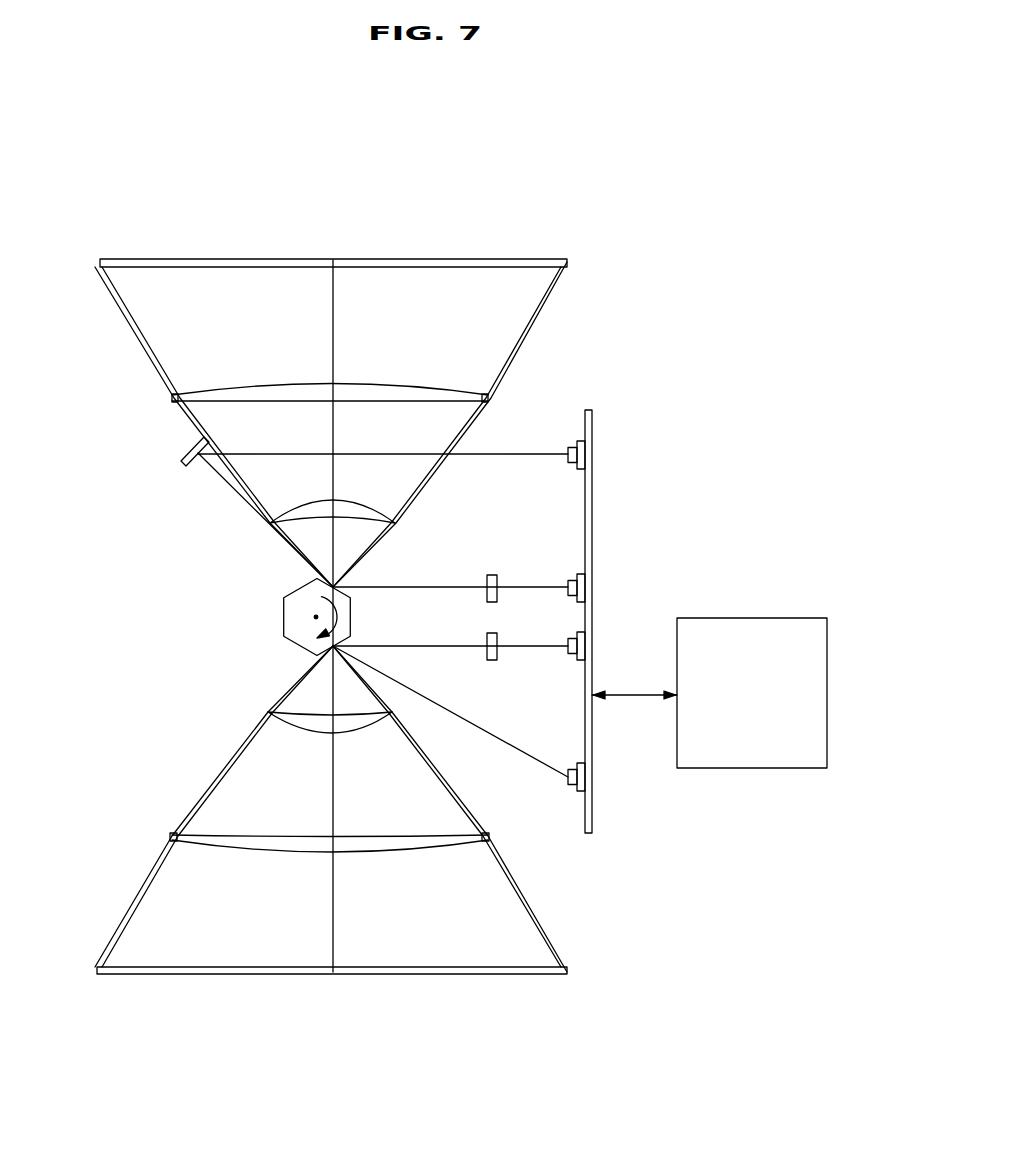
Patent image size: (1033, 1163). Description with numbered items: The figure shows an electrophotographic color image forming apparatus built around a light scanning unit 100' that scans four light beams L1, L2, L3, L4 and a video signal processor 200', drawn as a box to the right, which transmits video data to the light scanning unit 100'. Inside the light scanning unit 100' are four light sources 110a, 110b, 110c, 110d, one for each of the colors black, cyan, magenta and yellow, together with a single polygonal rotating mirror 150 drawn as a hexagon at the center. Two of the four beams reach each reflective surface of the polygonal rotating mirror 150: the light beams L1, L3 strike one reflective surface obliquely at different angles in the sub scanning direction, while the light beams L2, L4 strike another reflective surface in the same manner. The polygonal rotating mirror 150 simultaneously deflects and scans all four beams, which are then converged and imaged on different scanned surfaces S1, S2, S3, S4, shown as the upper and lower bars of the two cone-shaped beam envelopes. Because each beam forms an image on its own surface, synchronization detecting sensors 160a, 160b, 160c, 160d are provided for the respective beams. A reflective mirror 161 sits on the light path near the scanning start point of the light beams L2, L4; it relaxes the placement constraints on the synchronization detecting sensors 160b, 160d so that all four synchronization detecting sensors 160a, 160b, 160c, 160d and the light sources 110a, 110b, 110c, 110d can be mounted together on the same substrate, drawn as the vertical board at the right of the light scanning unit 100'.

The light scanning unit 100' is at (405, 569).
The video signal processor 200' is at (752, 657).
The polygonal rotating mirror 150 is at (283, 617).
The reflective mirror 161 is at (182, 463).
The synchronization detecting sensor 160a is at (527, 749).
The synchronization detecting sensor 160b is at (512, 470).
The synchronization detecting sensor 160c is at (572, 770).
The synchronization detecting sensor 160d is at (570, 465).
The light source 110a is at (514, 661).
The light source 110b is at (512, 574).
The light source 110c is at (570, 655).
The light source 110d is at (573, 582).
The scanned surface S1 is at (332, 944).
The scanned surface S2 is at (333, 230).
The scanned surface S3 is at (369, 967).
The scanned surface S4 is at (218, 260).
The light beam L1 is at (327, 809).
The light beam L2 is at (327, 424).
The light beam L3 is at (153, 882).
The light beam L4 is at (158, 372).